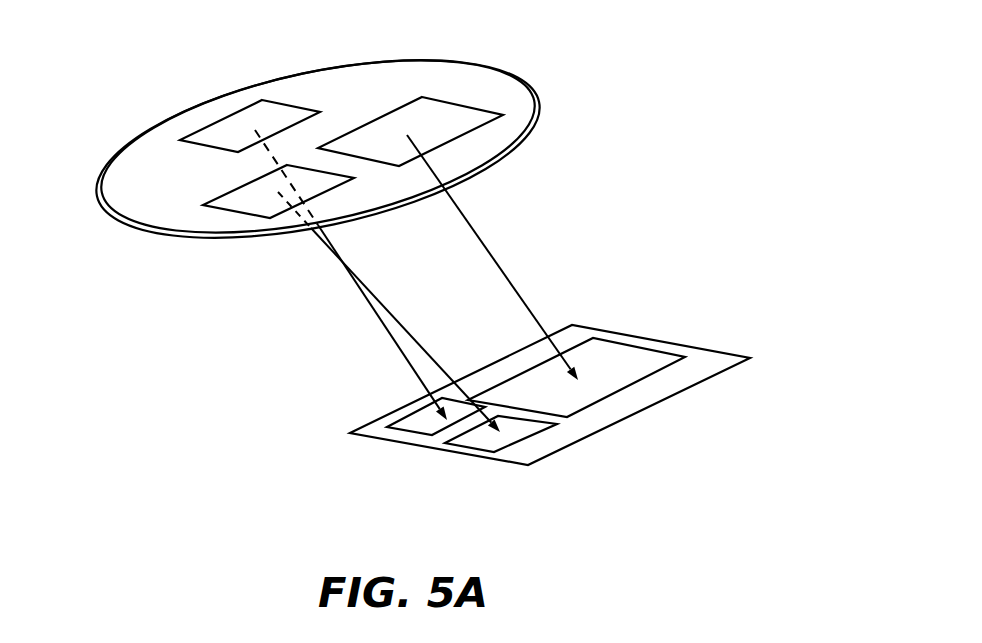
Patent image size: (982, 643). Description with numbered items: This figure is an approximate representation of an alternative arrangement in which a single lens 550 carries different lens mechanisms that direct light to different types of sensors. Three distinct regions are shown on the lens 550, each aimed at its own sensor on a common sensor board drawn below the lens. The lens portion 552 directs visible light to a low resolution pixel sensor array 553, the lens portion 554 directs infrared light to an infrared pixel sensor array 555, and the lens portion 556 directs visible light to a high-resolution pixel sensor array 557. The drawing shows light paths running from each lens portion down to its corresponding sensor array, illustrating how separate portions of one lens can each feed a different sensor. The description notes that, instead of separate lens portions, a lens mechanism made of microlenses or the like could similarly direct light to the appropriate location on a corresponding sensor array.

The lens 550 is at (377, 88).
The lens portion 552 is at (237, 132).
The low resolution pixel sensor array 553 is at (418, 417).
The lens portion 554 is at (250, 200).
The infrared pixel sensor array 555 is at (478, 442).
The lens portion 556 is at (457, 127).
The high-resolution pixel sensor array 557 is at (608, 378).